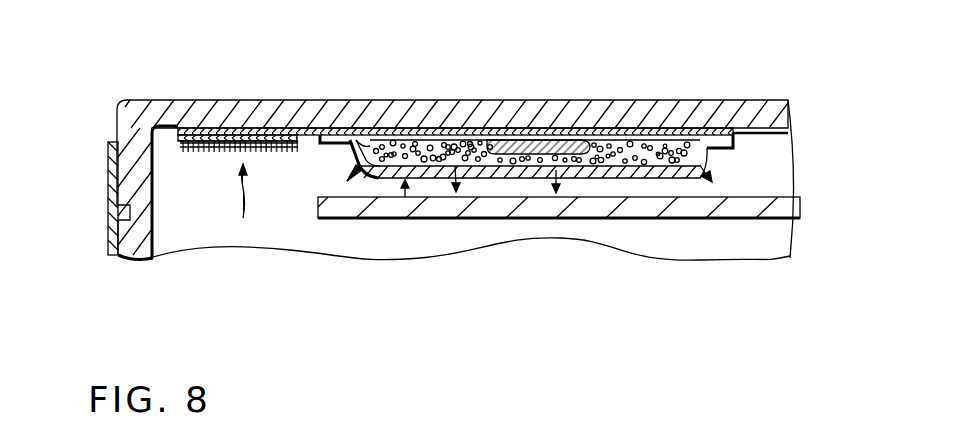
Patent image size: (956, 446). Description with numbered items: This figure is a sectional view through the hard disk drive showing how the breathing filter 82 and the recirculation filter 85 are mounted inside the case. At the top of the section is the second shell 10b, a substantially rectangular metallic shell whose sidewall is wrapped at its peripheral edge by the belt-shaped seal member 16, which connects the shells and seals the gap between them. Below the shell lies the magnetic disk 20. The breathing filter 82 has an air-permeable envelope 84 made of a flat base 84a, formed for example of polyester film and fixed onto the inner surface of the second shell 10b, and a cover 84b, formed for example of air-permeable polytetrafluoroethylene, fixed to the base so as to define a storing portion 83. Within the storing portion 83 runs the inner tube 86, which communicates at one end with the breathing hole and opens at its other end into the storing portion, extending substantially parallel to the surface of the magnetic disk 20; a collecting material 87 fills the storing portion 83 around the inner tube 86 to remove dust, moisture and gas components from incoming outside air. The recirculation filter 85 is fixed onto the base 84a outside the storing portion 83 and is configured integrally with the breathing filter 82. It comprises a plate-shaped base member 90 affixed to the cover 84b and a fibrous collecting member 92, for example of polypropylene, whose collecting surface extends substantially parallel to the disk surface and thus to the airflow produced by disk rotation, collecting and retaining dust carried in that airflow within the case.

The second shell 10b is at (311, 101).
The seal member 16 is at (107, 192).
The magnetic disk 20 is at (794, 211).
The breathing filter 82 is at (400, 199).
The storing portion 83 is at (448, 137).
The envelope 84 is at (455, 107).
The base 84a is at (592, 135).
The cover 84b is at (567, 75).
The recirculation filter 85 is at (246, 206).
The inner tube 86 is at (513, 137).
The collecting material 87 is at (384, 137).
The base member 90 is at (213, 134).
The collecting member 92 is at (196, 159).